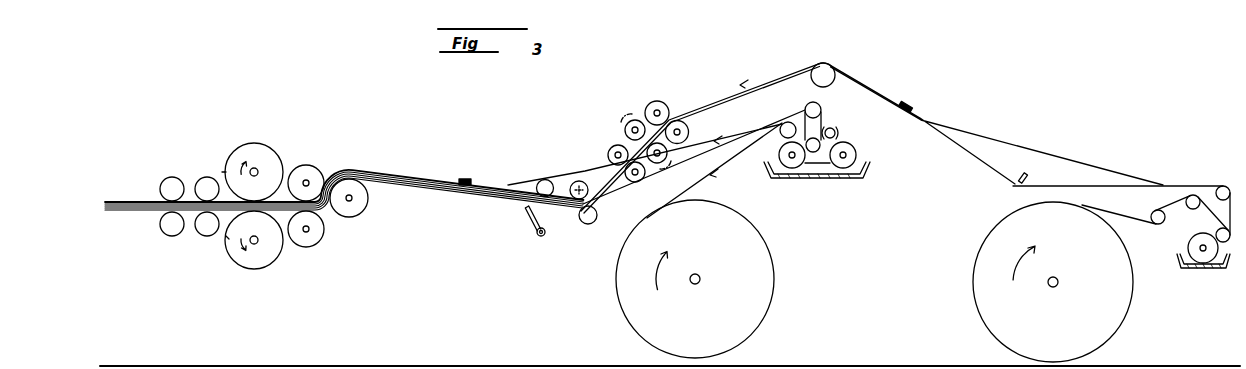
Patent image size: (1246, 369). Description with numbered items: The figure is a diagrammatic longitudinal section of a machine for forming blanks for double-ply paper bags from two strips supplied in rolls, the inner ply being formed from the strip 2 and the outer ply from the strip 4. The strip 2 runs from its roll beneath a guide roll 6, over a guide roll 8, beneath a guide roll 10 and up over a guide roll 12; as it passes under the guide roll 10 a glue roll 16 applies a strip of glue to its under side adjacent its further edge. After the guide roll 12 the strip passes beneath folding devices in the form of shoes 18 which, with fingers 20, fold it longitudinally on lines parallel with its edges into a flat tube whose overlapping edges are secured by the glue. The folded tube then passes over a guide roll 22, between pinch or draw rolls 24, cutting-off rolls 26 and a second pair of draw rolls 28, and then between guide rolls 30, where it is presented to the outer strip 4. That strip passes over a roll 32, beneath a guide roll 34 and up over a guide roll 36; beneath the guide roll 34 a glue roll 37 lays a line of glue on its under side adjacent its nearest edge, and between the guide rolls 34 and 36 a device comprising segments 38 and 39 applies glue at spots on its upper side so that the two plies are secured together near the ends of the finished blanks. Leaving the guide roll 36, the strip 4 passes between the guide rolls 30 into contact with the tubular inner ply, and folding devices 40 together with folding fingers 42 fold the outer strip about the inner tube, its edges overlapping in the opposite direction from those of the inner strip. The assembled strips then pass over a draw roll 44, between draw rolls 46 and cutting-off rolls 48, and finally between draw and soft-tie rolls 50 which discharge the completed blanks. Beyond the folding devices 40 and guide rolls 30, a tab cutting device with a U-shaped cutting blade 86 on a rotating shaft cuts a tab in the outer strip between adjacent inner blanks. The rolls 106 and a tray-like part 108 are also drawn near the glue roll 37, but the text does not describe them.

The strip 2 is at (977, 288).
The strip 4 is at (692, 190).
The guide roll 6 is at (1152, 212).
The guide roll 8 is at (1190, 209).
The guide roll 10 is at (1221, 228).
The guide roll 12 is at (1222, 185).
The glue roll 16 is at (1201, 264).
The shoes 18 is at (1016, 180).
The fingers 20 is at (913, 105).
The guide roll 22 is at (834, 80).
The pinch or draw rolls 24 is at (665, 104).
The cutting-off rolls 26 is at (624, 129).
The draw rolls 28 is at (609, 151).
The guide rolls 30 is at (581, 181).
The roll 32 is at (781, 135).
The guide roll 34 is at (812, 139).
The guide roll 36 is at (821, 110).
The glue roll 37 is at (788, 167).
The segment 38 is at (822, 128).
The segment 39 is at (838, 131).
The folding devices 40 is at (568, 193).
The folding fingers 42 is at (465, 179).
The draw roll 44 is at (357, 209).
The draw rolls 46 is at (314, 170).
The cutting-off rolls 48 is at (258, 152).
The draw and soft-tie rolls 50 is at (200, 179).
The U-shaped cutting blade 86 is at (530, 226).
The roller 106 is at (856, 154).
The tray 108 is at (826, 174).